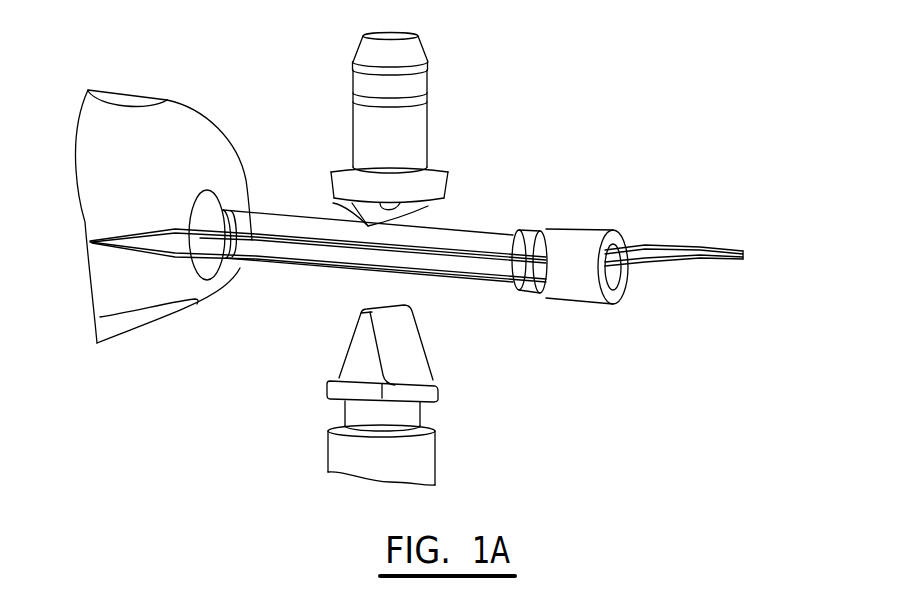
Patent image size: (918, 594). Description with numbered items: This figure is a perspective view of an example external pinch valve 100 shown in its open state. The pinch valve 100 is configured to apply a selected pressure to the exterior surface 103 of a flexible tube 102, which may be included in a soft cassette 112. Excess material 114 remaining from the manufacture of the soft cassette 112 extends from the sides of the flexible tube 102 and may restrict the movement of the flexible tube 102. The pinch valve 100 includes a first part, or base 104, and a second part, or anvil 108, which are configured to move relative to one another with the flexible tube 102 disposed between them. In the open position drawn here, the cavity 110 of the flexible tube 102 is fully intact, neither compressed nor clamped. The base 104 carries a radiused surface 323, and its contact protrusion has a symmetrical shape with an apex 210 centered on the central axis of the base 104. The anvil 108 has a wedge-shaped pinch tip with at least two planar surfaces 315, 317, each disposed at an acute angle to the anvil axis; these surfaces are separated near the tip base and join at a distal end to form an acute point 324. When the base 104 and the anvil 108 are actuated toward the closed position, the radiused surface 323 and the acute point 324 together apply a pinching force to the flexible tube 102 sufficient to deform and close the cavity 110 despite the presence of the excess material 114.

The pinch valve 100 is at (508, 112).
The flexible tube 102 is at (577, 323).
The exterior surface 103 is at (603, 229).
The base 104 is at (357, 127).
The anvil 108 is at (345, 453).
The cavity 110 is at (628, 294).
The soft cassette 112 is at (165, 72).
The excess material 114 is at (702, 237).
The apex 210 is at (355, 208).
The planar surface 315 is at (343, 360).
The planar surface 317 is at (398, 334).
The radiused surface 323 is at (410, 214).
The acute point 324 is at (373, 313).